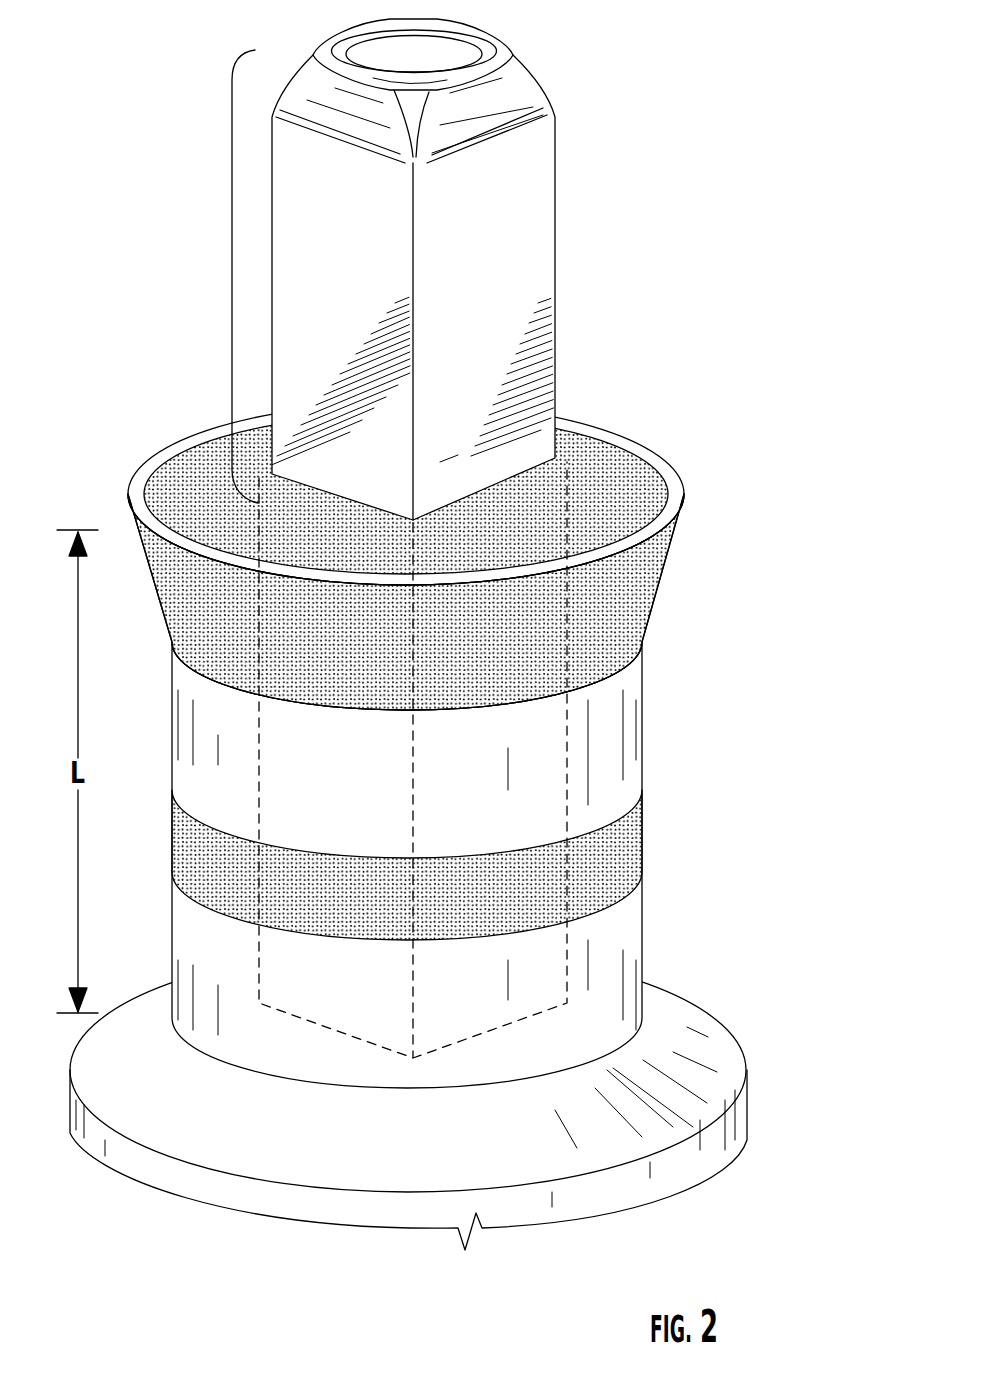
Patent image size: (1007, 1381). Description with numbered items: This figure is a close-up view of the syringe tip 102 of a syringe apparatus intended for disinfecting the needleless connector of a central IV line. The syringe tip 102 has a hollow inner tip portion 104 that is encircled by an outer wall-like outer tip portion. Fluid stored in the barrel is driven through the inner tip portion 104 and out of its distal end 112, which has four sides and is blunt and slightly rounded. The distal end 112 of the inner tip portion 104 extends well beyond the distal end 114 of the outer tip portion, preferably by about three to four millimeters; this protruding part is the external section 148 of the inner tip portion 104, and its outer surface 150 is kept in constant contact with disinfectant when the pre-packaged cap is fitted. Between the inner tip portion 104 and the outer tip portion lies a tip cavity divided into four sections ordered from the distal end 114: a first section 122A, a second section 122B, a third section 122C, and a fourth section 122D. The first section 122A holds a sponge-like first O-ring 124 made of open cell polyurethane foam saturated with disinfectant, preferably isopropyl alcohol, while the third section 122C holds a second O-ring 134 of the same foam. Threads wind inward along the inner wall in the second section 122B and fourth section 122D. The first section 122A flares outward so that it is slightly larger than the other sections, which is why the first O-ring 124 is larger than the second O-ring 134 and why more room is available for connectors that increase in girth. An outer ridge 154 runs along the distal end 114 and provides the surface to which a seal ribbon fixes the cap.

The syringe tip 102 is at (712, 196).
The inner tip portion 104 is at (495, 335).
The distal end of the inner tip portion 112 is at (473, 35).
The distal end of the outer tip portion 114 is at (685, 492).
The first section 122A is at (716, 472).
The second section 122B is at (716, 640).
The third section 122C is at (716, 777).
The fourth section 122D is at (716, 868).
The first O-ring 124 is at (218, 642).
The second O-ring 134 is at (192, 855).
The external section of the inner tip portion 148 is at (232, 270).
The outer surface of the external section 150 is at (355, 309).
The outer ridge 154 is at (150, 517).